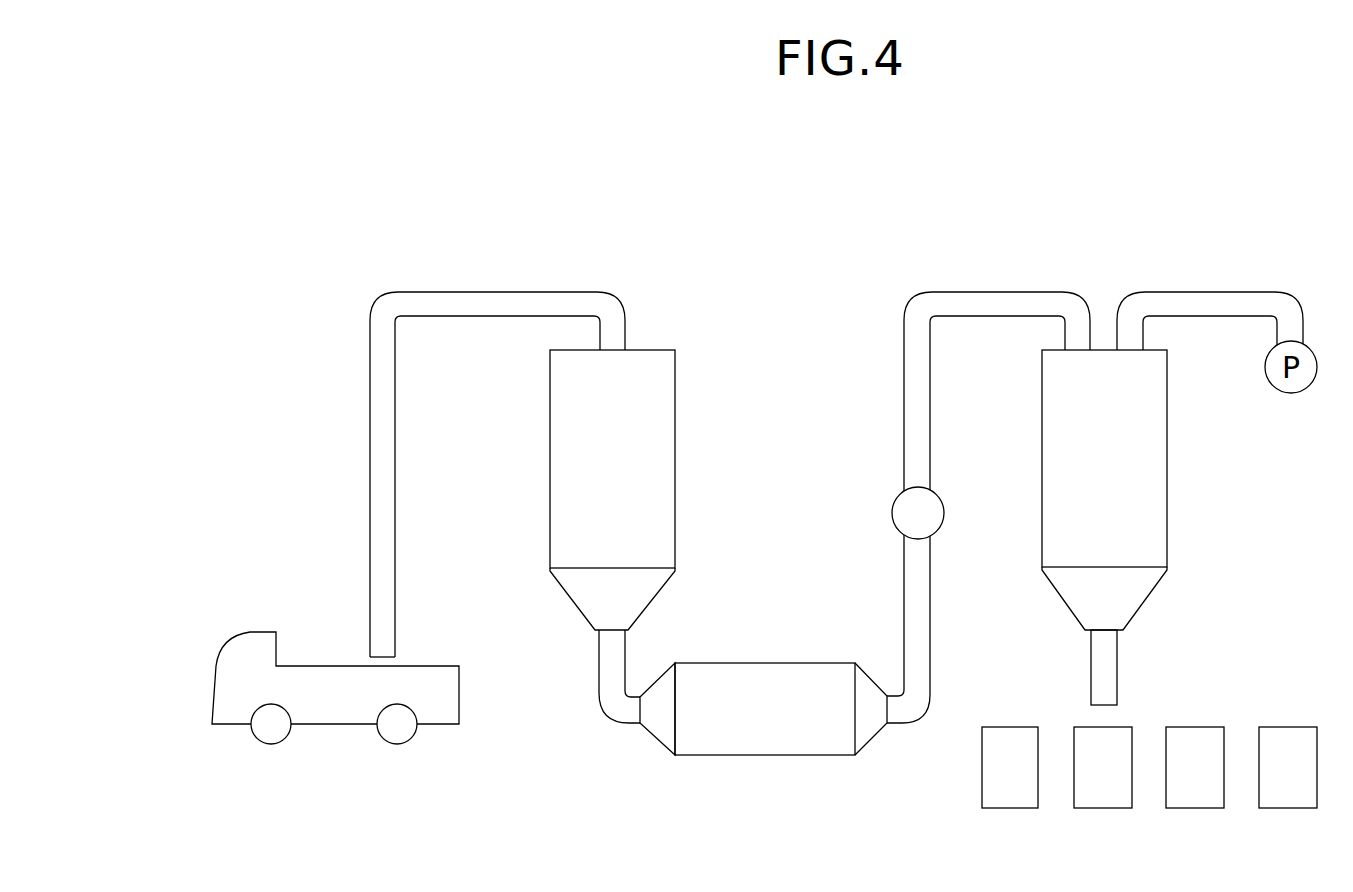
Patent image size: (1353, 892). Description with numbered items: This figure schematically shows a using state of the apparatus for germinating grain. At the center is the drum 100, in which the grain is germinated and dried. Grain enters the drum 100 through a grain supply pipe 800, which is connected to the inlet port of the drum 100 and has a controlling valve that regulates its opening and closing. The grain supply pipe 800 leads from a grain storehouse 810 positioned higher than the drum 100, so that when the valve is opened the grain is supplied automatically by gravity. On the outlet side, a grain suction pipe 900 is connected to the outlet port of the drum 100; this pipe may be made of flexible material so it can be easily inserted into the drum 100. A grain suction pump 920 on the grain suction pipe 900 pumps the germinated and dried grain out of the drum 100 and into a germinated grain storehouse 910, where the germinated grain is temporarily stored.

The drum 100 is at (766, 746).
The grain supply pipe 800 is at (501, 557).
The grain storehouse 810 is at (666, 483).
The grain suction pipe 900 is at (943, 507).
The germinated grain storehouse 910 is at (1153, 528).
The grain suction pump 920 is at (905, 510).